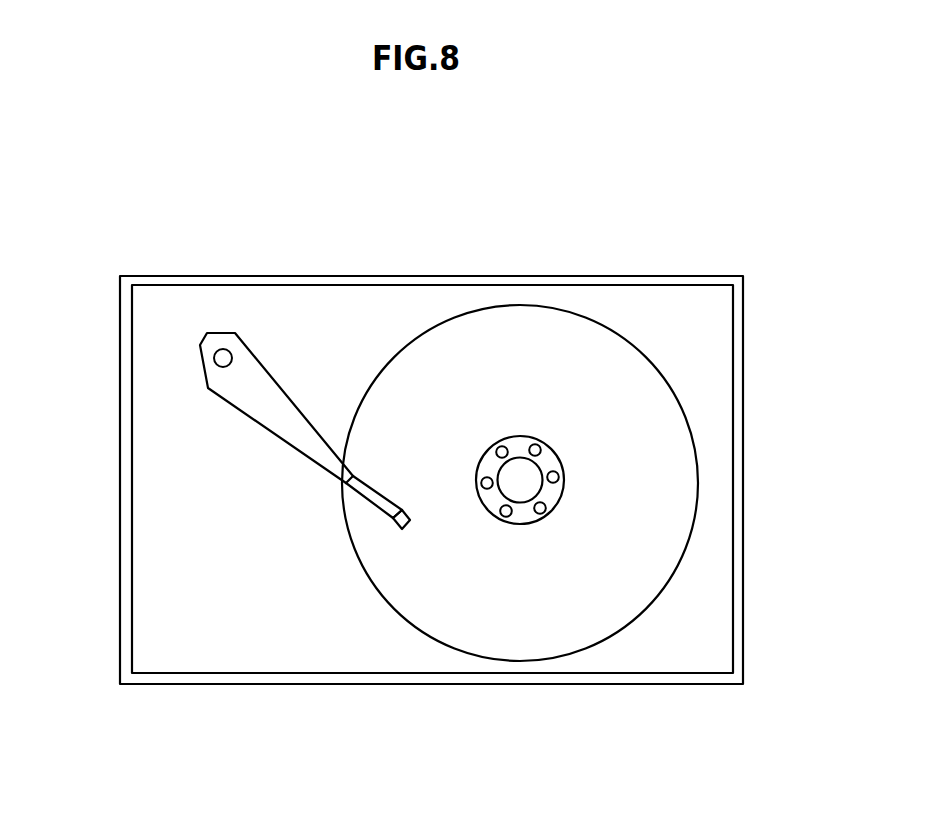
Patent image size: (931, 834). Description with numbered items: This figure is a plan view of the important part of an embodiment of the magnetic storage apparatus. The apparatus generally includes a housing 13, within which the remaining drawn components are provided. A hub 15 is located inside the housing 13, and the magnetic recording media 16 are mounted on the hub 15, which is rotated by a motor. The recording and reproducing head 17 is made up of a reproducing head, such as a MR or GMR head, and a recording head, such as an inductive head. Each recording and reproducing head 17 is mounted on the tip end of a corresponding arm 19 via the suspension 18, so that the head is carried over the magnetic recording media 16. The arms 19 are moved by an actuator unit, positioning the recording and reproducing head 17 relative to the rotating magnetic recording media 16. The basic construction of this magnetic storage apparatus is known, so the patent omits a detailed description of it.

The housing 13 is at (738, 665).
The hub 15 is at (556, 458).
The magnetic recording media 16 is at (572, 323).
The recording and reproducing head 17 is at (410, 512).
The suspension 18 is at (377, 478).
The arm 19 is at (252, 421).